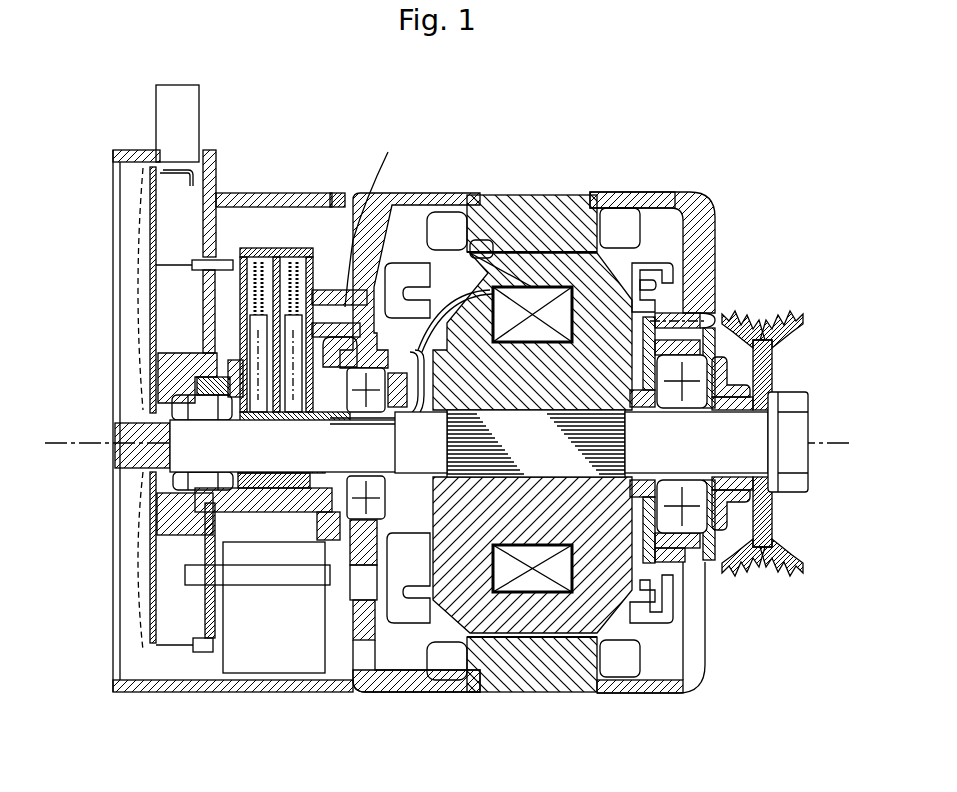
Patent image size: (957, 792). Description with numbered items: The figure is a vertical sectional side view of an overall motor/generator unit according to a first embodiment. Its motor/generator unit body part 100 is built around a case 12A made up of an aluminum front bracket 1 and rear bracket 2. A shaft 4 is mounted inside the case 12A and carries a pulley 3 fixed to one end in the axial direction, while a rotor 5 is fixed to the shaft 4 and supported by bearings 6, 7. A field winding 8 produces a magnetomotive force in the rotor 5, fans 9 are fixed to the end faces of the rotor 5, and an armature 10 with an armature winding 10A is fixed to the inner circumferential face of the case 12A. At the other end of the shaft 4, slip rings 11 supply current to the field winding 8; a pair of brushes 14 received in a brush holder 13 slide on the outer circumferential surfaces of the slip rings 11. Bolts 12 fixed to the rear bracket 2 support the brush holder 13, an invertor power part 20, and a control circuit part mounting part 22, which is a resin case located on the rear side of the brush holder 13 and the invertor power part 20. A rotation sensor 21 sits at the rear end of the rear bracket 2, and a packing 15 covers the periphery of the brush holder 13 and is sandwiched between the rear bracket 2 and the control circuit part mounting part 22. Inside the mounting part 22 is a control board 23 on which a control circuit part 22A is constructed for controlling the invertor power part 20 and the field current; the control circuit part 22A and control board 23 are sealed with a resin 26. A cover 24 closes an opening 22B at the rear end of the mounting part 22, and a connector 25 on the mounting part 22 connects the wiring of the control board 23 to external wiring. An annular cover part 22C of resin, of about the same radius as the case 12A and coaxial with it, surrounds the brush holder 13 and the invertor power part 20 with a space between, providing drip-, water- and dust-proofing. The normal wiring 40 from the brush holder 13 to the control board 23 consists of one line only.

The front bracket 1 is at (715, 227).
The rear bracket 2 is at (402, 192).
The pulley 3 is at (760, 312).
The shaft 4 is at (755, 420).
The rotor 5 is at (695, 538).
The bearing 6 is at (710, 552).
The bearing 7 is at (372, 512).
The field winding 8 is at (530, 568).
The fan 9 is at (413, 615).
The armature 10 is at (527, 195).
The armature winding 10A is at (637, 213).
The slip ring 11 is at (345, 317).
The bolt 12 is at (283, 712).
The case 12A is at (598, 182).
The brush holder 13 is at (270, 248).
The brush 14 is at (293, 347).
The packing 15 is at (165, 375).
The invertor power part 20 is at (268, 660).
The rotation sensor 21 is at (198, 412).
The control circuit part mounting part 22 is at (207, 147).
The control circuit part 22A is at (142, 307).
The opening 22B is at (117, 683).
The annular cover part 22C is at (322, 195).
The control board 23 is at (150, 223).
The cover 24 is at (113, 187).
The connector 25 is at (168, 122).
The resin 26 is at (143, 250).
The normal wiring 40 is at (172, 267).
The motor/generator unit body part 100 is at (530, 155).